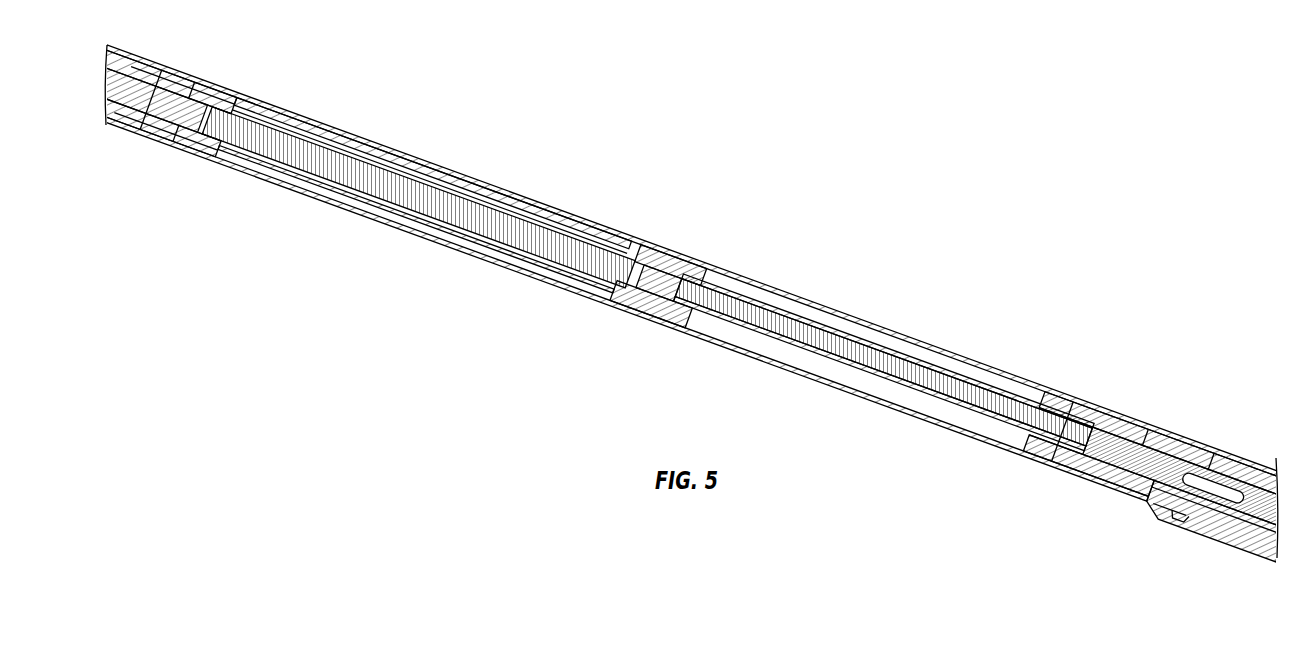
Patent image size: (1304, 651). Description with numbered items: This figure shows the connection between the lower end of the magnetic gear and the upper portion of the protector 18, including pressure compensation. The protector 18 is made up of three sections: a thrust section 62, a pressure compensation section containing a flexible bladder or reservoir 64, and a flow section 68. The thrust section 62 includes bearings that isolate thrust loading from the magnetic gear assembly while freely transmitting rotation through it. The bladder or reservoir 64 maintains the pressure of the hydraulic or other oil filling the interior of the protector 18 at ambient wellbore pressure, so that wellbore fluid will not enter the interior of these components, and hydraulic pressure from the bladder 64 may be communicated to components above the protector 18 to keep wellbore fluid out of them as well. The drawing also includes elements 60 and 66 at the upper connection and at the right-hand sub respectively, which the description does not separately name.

The protector 18 is at (707, 235).
The connector assembly 60 is at (196, 115).
The thrust section 62 is at (257, 172).
The flexible bladder or reservoir 64 is at (469, 254).
The end sub 66 is at (1107, 422).
The flow section 68 is at (856, 391).